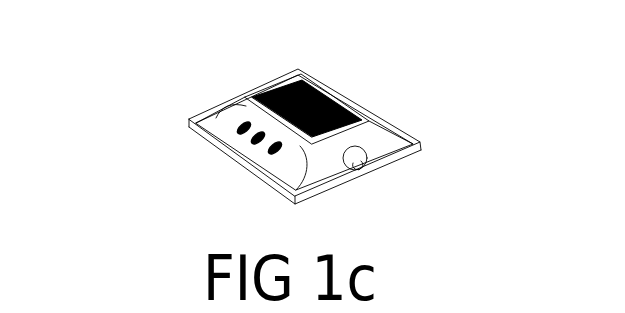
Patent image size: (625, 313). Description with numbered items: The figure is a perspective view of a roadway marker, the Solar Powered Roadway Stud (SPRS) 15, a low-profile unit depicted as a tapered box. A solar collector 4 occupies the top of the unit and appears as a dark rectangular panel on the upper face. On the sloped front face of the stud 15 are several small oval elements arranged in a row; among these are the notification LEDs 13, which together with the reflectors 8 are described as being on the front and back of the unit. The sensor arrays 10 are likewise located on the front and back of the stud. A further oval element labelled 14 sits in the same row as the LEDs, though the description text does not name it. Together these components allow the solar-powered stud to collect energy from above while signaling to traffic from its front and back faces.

The solar collector 4 is at (310, 83).
The reflectors 8 is at (225, 120).
The sensor arrays 10 is at (237, 128).
The notification LEDs 13 is at (251, 140).
The light emitter (LED) 14 is at (271, 151).
The Solar Powered Roadway Stud (SPRS) 15 is at (392, 163).